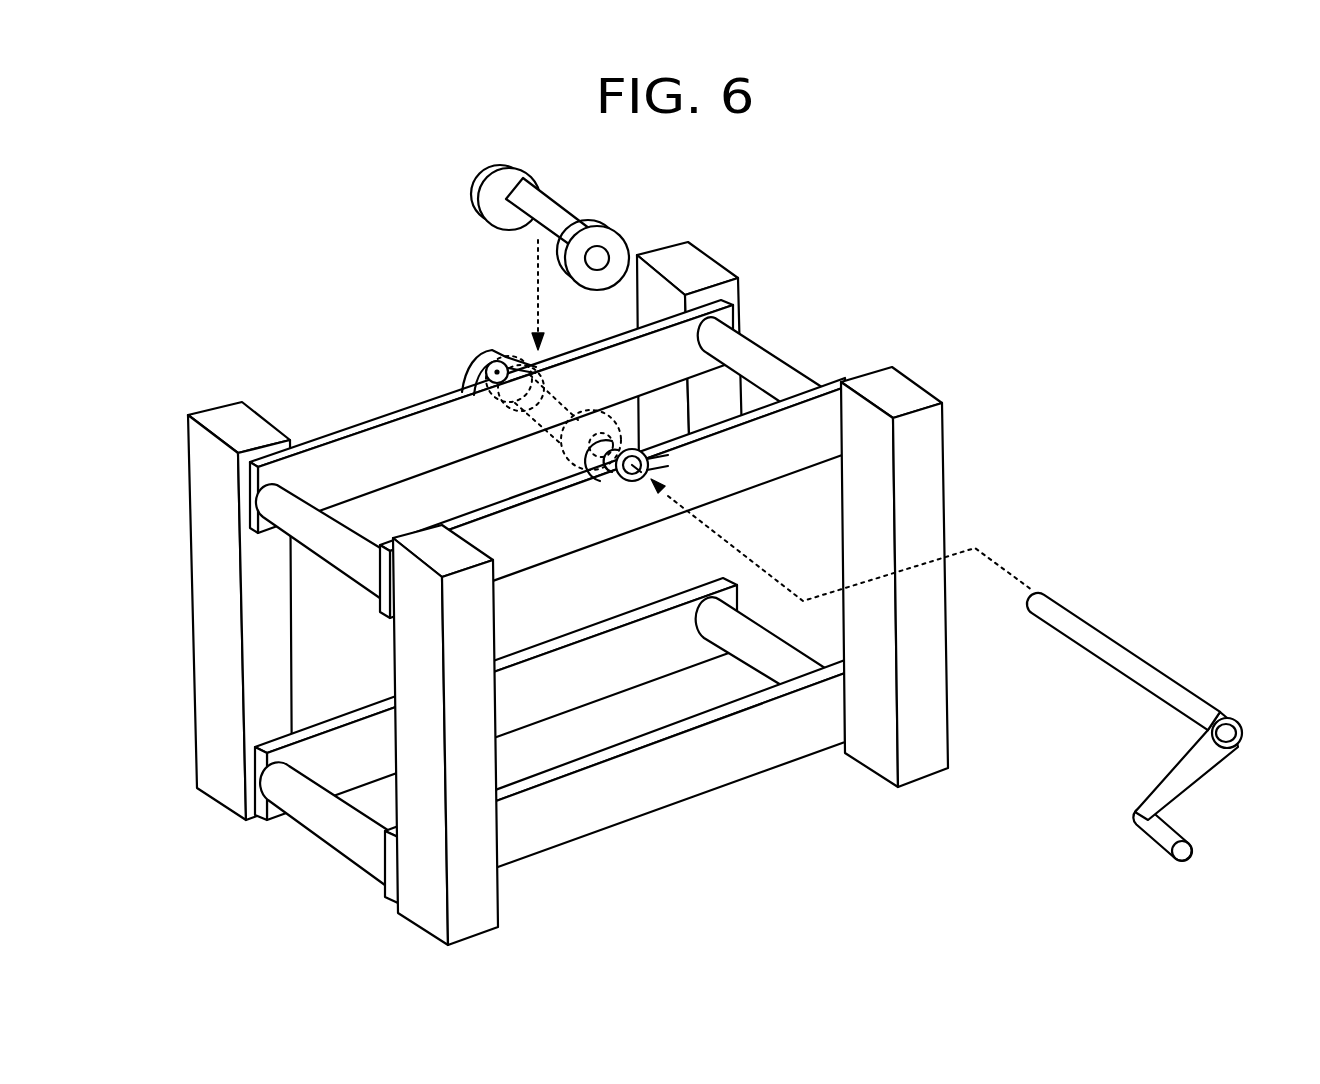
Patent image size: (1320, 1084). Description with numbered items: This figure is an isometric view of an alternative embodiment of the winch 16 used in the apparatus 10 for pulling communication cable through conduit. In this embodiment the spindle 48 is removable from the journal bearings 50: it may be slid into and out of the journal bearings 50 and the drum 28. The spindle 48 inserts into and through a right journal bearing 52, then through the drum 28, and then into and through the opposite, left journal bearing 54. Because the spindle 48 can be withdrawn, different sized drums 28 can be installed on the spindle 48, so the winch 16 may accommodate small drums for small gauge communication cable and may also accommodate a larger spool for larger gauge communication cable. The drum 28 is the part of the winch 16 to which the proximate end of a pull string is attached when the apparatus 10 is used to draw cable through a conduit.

The apparatus 10 is at (568, 551).
The winch 16 is at (440, 369).
The drum 28 is at (548, 204).
The spindle 48 is at (1122, 641).
The journal bearings 50 is at (500, 352).
The right journal bearing 52 is at (650, 468).
The left journal bearing 54 is at (502, 385).